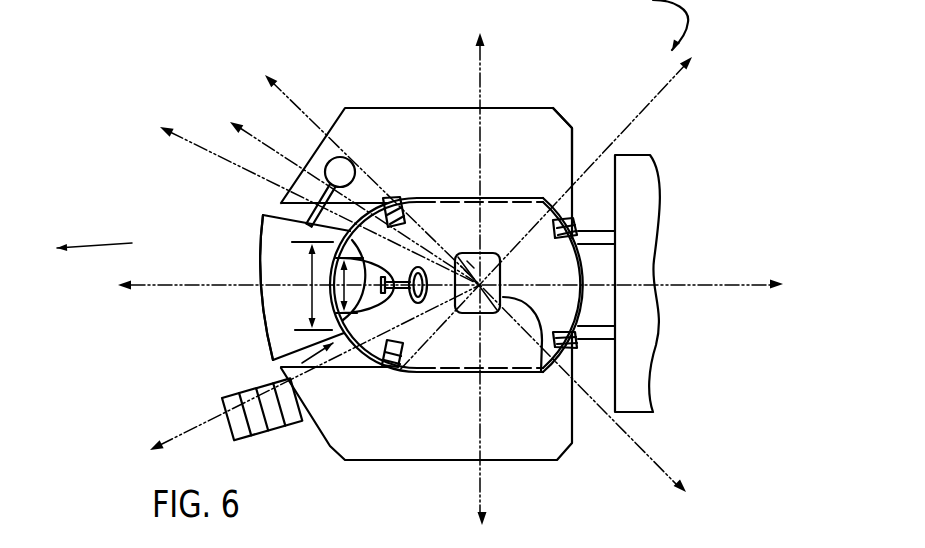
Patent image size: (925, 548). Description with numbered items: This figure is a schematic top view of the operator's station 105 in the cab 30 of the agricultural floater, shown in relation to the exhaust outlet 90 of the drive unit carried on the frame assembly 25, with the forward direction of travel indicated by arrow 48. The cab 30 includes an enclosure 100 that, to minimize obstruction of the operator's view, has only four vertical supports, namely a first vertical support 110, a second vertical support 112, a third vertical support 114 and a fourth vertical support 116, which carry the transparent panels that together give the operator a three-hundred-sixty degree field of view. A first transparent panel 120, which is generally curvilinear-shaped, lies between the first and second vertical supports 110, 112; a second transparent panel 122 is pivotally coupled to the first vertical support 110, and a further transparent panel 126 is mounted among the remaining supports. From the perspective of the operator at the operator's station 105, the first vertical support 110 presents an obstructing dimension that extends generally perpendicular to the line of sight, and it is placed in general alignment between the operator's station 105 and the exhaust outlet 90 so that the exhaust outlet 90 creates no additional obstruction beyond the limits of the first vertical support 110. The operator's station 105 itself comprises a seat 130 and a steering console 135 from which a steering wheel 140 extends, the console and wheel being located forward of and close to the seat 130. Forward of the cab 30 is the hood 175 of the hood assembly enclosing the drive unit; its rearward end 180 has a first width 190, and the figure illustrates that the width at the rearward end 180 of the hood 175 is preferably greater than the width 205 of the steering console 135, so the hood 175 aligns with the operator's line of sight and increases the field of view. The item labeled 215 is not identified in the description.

The frame assembly 25 is at (650, 155).
The cab 30 is at (533, 143).
The forward direction of travel 48 is at (92, 243).
The exhaust outlet 90 is at (324, 157).
The enclosure 100 is at (452, 192).
The operator's station 105 is at (441, 332).
The first vertical support 110 is at (383, 192).
The second vertical support 112 is at (397, 372).
The third vertical support 114 is at (578, 338).
The fourth vertical support 116 is at (601, 220).
The first transparent panel 120 is at (330, 266).
The second transparent panel 122 is at (417, 196).
The transparent panel 126 is at (588, 273).
The seat 130 is at (546, 372).
The steering console 135 is at (363, 312).
The steering wheel 140 is at (418, 268).
The hood 175 is at (272, 333).
The rearward end 180 is at (283, 378).
The first width 190 is at (312, 297).
The width 205 is at (265, 212).
The light direction arrows 215 is at (320, 142).